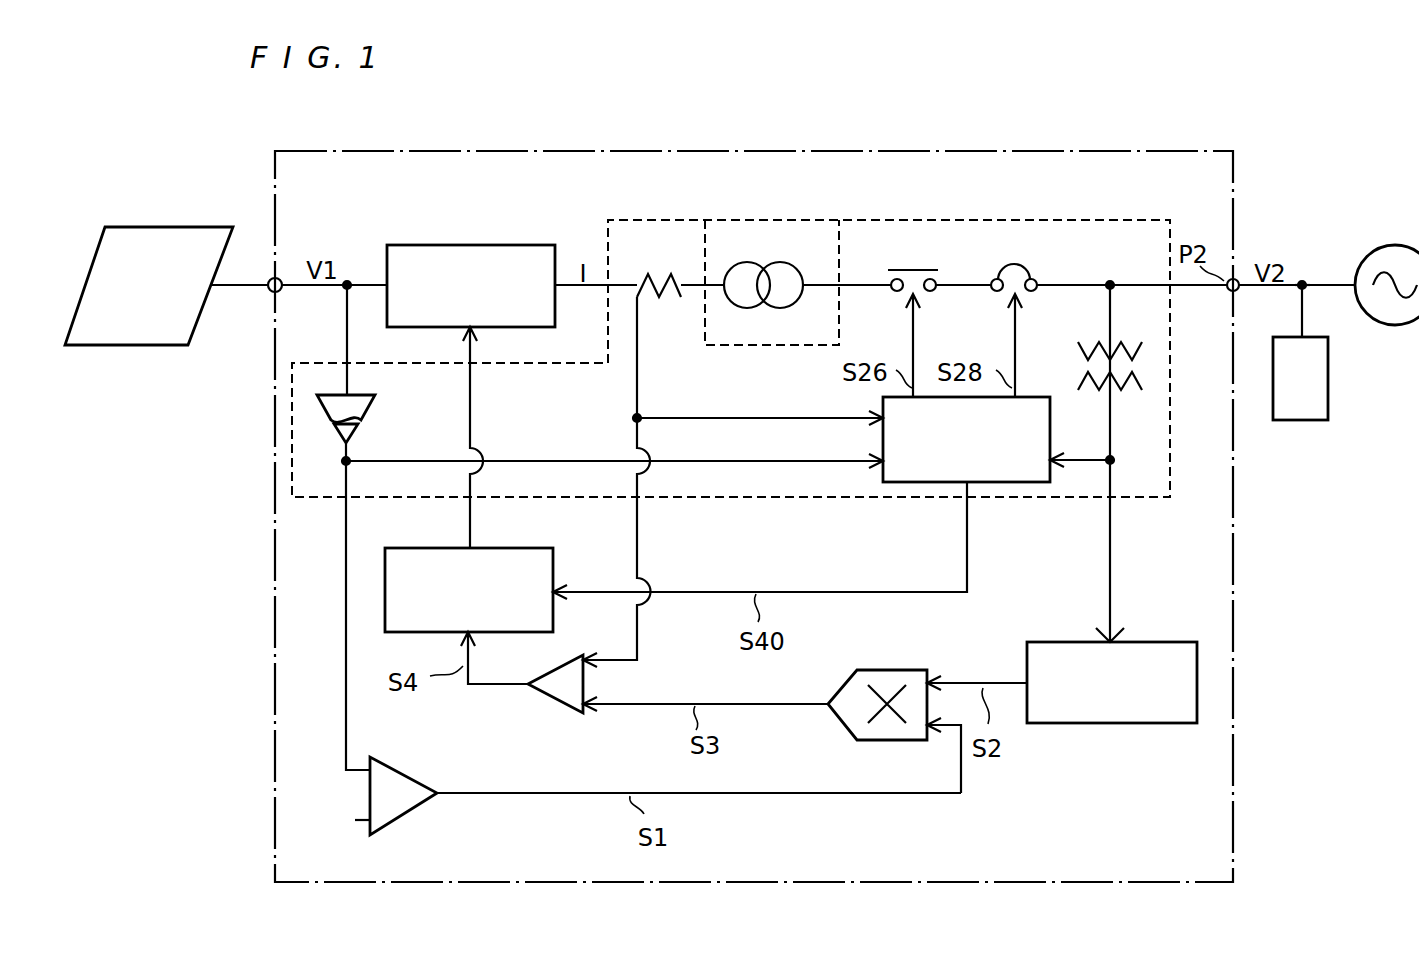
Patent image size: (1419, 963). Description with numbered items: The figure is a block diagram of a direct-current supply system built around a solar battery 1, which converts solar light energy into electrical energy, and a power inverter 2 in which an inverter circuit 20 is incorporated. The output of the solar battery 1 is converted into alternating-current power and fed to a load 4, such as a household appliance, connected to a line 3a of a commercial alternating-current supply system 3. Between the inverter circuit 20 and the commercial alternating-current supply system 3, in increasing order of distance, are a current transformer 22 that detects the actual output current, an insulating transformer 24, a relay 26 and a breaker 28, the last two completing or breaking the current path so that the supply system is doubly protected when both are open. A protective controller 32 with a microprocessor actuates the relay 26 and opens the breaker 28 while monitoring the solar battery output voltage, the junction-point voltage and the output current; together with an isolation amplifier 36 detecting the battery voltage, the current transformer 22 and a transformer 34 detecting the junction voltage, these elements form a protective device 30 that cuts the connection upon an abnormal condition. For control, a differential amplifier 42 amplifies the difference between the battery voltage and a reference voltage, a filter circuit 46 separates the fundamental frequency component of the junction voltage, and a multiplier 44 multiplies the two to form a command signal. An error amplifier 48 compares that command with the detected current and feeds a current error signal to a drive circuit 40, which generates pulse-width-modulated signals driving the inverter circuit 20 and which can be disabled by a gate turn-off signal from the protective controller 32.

The solar battery 1 is at (196, 226).
The power inverter 2 is at (484, 150).
The commercial alternating-current supply system 3 is at (1393, 245).
The line 3a is at (1324, 283).
The load 4 is at (1328, 392).
The inverter circuit 20 is at (500, 245).
The current transformer 22 is at (660, 301).
The insulating transformer 24 is at (778, 262).
The relay 26 is at (922, 270).
The breaker 28 is at (1037, 268).
The protective device 30 is at (905, 222).
The protective controller 32 is at (1054, 455).
The transformer 34 is at (1124, 378).
The isolation amplifier 36 is at (371, 415).
The drive circuit 40 is at (553, 558).
The differential amplifier 42 is at (405, 813).
The multiplier 44 is at (900, 670).
The filter circuit 46 is at (1155, 642).
The error amplifier 48 is at (545, 697).